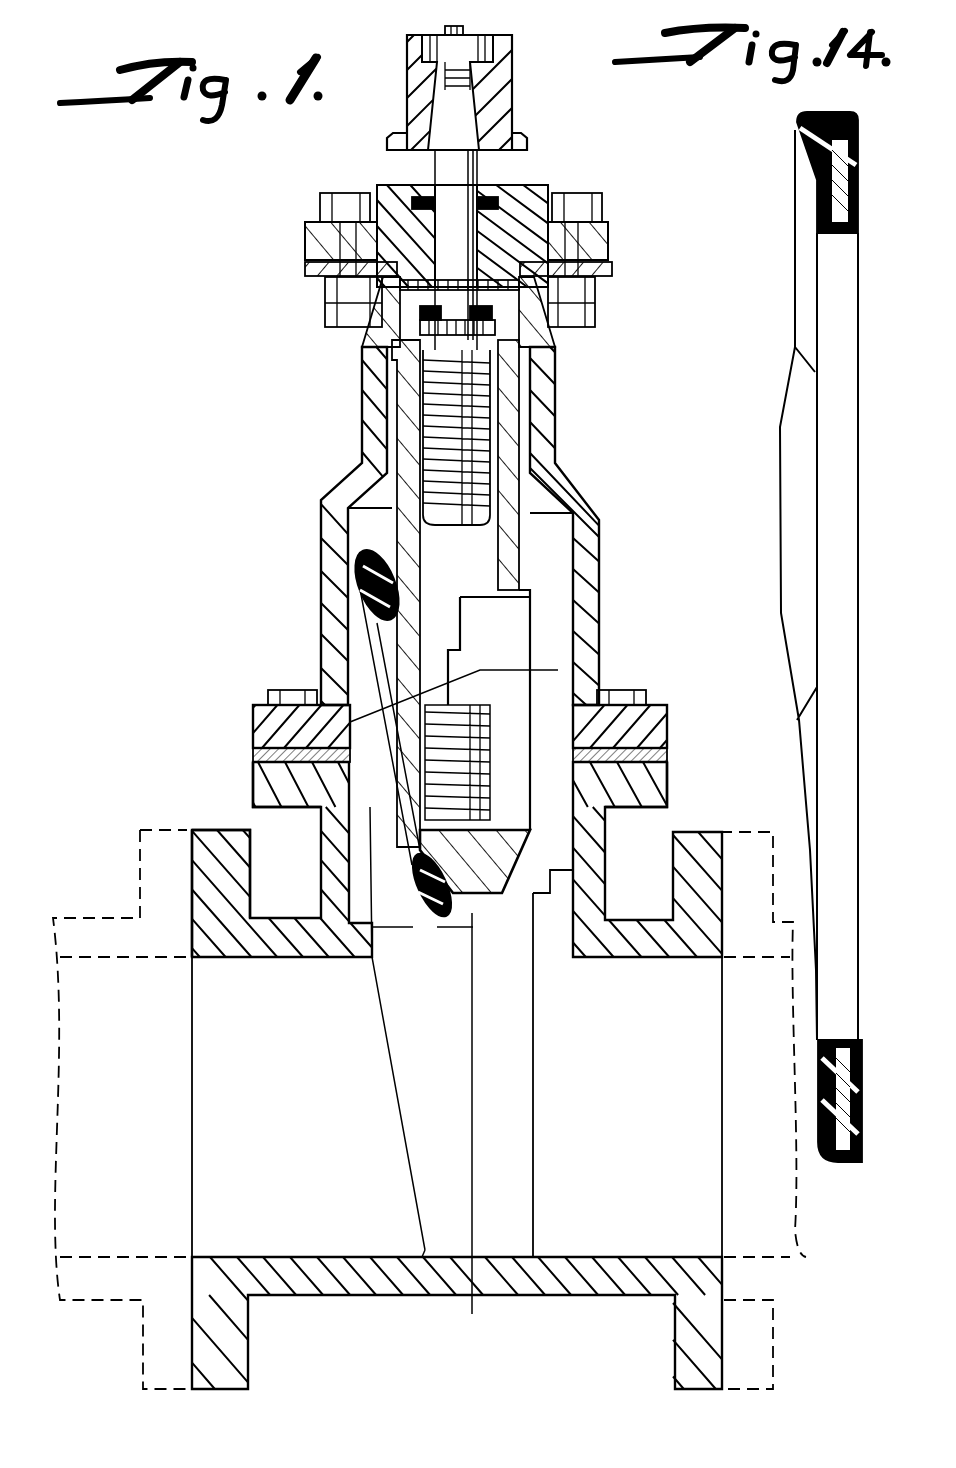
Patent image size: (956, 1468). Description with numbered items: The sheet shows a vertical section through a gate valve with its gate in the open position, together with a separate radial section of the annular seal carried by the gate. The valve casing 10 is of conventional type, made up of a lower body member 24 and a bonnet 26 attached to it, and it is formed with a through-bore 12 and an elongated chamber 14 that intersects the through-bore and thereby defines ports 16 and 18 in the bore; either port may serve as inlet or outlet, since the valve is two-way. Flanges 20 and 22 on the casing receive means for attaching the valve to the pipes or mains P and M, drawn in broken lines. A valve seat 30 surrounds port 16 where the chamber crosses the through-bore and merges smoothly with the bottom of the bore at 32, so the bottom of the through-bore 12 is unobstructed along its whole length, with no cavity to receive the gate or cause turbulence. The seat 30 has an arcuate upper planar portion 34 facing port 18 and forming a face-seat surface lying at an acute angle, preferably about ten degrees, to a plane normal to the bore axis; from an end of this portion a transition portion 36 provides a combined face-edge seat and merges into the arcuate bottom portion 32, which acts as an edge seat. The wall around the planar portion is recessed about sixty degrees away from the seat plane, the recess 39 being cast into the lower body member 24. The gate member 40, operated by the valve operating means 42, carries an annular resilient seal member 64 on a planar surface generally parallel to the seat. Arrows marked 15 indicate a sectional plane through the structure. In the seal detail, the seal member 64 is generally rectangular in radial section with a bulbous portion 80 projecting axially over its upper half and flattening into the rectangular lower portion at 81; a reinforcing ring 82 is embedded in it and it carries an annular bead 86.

In FIG. 1, the valve casing 10 is at (682, 602).
In FIG. 1, the through-bore 12 is at (698, 1136).
In FIG. 1, the elongated chamber 14 is at (528, 842).
In FIG. 1, the section line 15- 15 is at (362, 735).
In FIG. 1, the port 16 is at (400, 1046).
In FIG. 1, the port 18 is at (533, 1053).
In FIG. 1, the flange 20 is at (222, 830).
In FIG. 1, the flange 22 is at (708, 832).
In FIG. 1, the lower body member 24 is at (668, 772).
In FIG. 1, the bonnet 26 is at (668, 720).
In FIG. 1, the valve seat 30 is at (392, 955).
In FIG. 1, the arcuate bottom portion 32 is at (446, 1258).
In FIG. 1, the arcuate upper planar portion 34 is at (380, 942).
In FIG. 1, the transition portion 36 is at (407, 1137).
In FIG. 1, the recess 39 is at (360, 922).
In FIG. 1, the gate member 40 is at (390, 508).
In FIG. 1, the valve operating means 42 is at (495, 175).
In FIG. 1, the annular resilient seal member 64 is at (376, 558).
In FIG. 14, the annular resilient seal member 64 is at (782, 281).
In FIG. 14, the bulbous portion 80 is at (795, 133).
In FIG. 14, the merging location 81 is at (793, 847).
In FIG. 14, the reinforcing ring 82 is at (845, 1165).
In FIG. 14, the annular bead 86 is at (868, 158).
In FIG. 1, the pipe or main P is at (104, 910).
In FIG. 1, the pipe or main M is at (763, 1089).